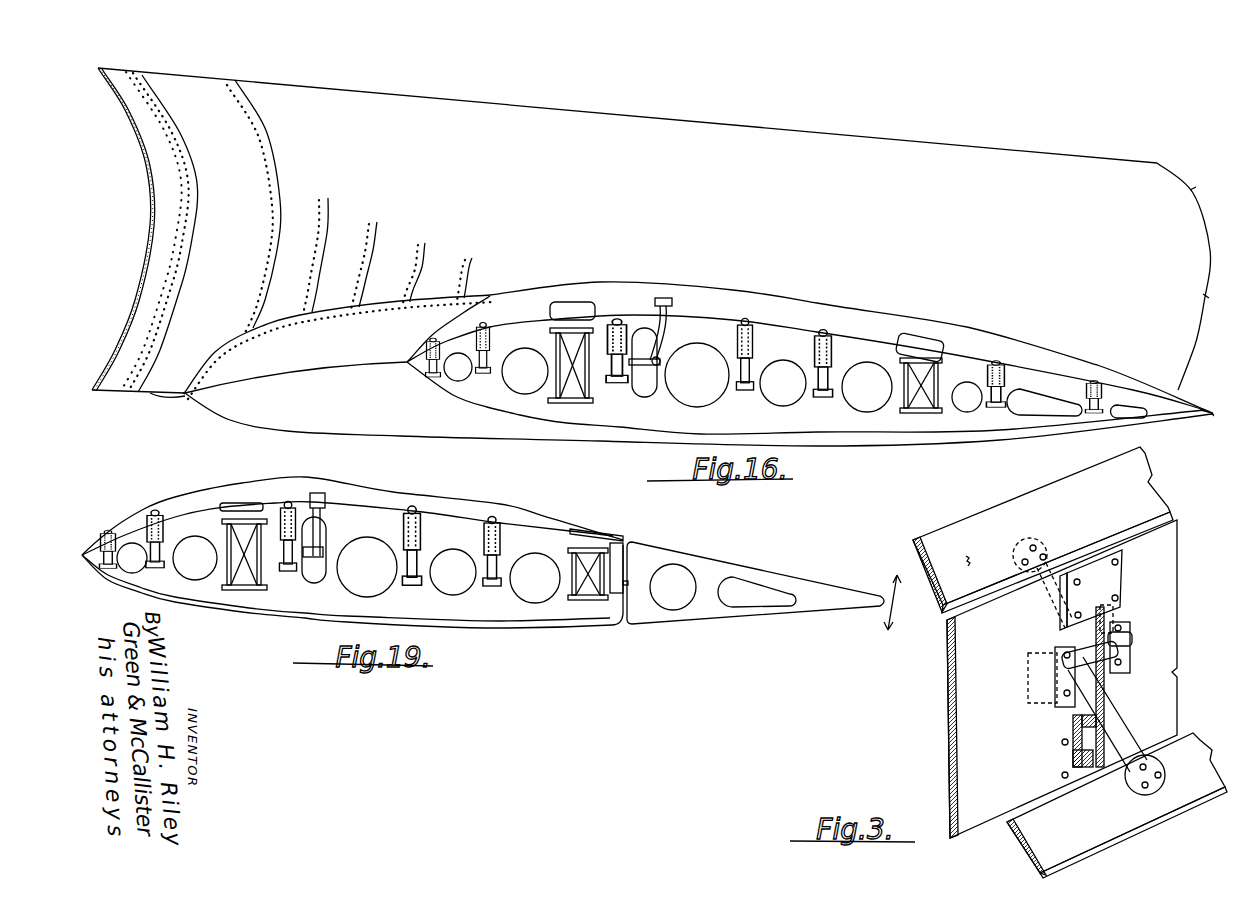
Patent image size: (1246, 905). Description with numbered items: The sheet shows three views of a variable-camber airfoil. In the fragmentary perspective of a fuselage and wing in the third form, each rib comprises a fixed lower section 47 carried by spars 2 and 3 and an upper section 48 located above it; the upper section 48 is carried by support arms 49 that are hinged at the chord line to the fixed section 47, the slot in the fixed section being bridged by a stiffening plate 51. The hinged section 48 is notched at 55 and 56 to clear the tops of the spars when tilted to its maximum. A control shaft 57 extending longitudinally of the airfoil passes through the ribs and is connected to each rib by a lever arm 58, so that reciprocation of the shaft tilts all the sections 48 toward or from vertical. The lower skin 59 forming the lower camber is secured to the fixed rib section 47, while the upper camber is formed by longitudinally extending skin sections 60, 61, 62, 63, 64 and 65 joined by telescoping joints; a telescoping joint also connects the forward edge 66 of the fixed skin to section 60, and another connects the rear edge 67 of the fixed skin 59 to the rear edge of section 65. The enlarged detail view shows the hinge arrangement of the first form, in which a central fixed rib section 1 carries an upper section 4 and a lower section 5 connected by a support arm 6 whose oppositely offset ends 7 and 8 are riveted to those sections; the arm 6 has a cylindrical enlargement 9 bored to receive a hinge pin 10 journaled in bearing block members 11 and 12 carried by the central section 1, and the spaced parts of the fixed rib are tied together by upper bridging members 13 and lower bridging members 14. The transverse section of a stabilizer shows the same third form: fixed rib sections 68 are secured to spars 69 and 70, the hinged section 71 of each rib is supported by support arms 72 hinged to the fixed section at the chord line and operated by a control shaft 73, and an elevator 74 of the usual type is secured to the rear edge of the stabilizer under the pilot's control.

In FIG. 3, the fixed rib section 1 is at (995, 634).
In FIG. 16, the spar 2 is at (553, 388).
In FIG. 16, the spar 3 is at (898, 400).
In FIG. 3, the upper section 4 is at (1108, 509).
In FIG. 3, the lower section 5 is at (1194, 787).
In FIG. 3, the support arm 6 is at (1115, 720).
In FIG. 3, the offset end 7 is at (1037, 537).
In FIG. 3, the offset end 8 is at (1137, 792).
In FIG. 3, the cylindrical enlargement 9 is at (1103, 678).
In FIG. 3, the hinge pin 10 is at (1127, 643).
In FIG. 3, the bearing block member 11 is at (1133, 601).
In FIG. 3, the bearing block member 12 is at (1122, 657).
In FIG. 3, the upper bridging member 13 is at (1112, 580).
In FIG. 3, the lower bridging member 14 is at (1093, 763).
In FIG. 16, the fixed lower rib section 47 is at (731, 417).
In FIG. 16, the upper rib section 48 is at (702, 311).
In FIG. 16, the support arm 49 is at (493, 356).
In FIG. 16, the stiffening plate 51 is at (490, 332).
In FIG. 16, the notch 55 is at (585, 300).
In FIG. 16, the notch 56 is at (933, 343).
In FIG. 16, the control shaft 57 is at (660, 362).
In FIG. 16, the lever arm 58 is at (668, 318).
In FIG. 16, the lower skin 59 is at (366, 407).
In FIG. 16, the upper skin section 60 is at (296, 349).
In FIG. 16, the upper skin section 61 is at (640, 282).
In FIG. 16, the upper skin section 62 is at (767, 296).
In FIG. 16, the upper skin section 63 is at (878, 314).
In FIG. 16, the upper skin section 64 is at (1010, 346).
In FIG. 16, the upper skin section 65 is at (1125, 381).
In FIG. 16, the forward edge of fixed skin 66 is at (373, 360).
In FIG. 16, the rear edge of fixed skin 67 is at (1213, 409).
In FIG. 19, the fixed rib section 68 is at (409, 611).
In FIG. 19, the spar 69 is at (228, 574).
In FIG. 19, the spar 70 is at (578, 584).
In FIG. 19, the hinged rib section 71 is at (390, 494).
In FIG. 19, the support arm 72 is at (485, 558).
In FIG. 19, the control shaft 73 is at (305, 585).
In FIG. 19, the elevator 74 is at (717, 564).